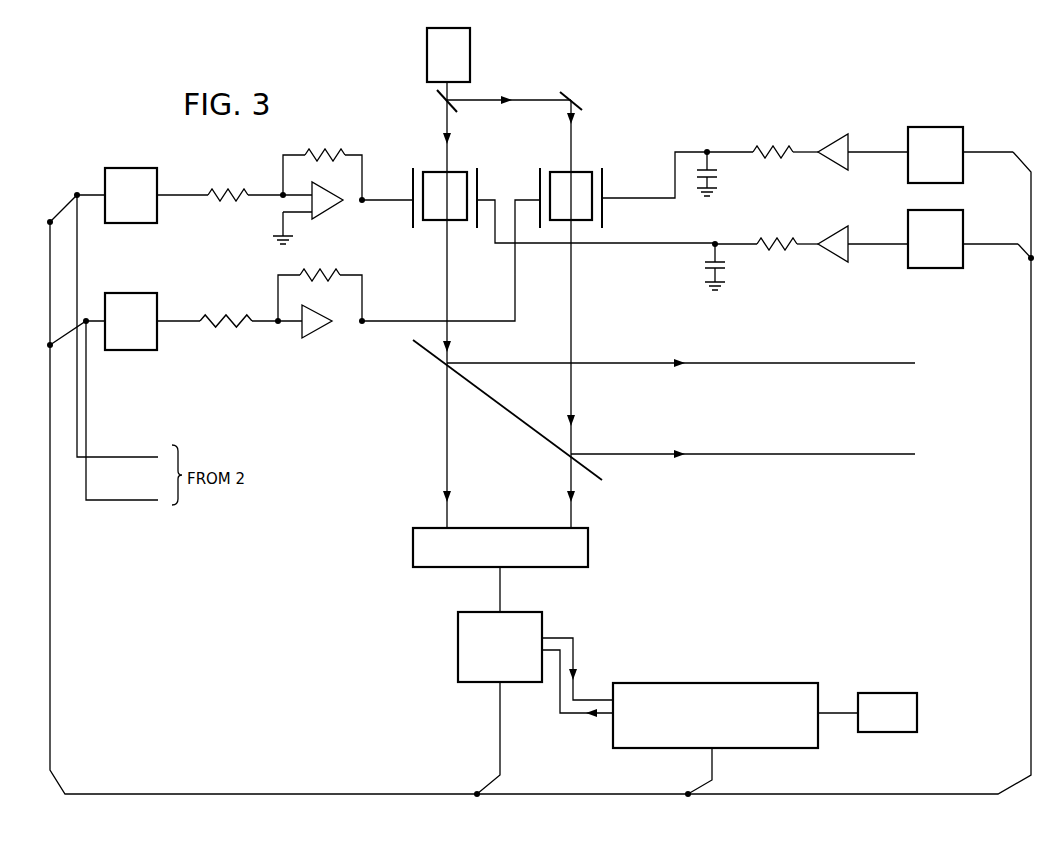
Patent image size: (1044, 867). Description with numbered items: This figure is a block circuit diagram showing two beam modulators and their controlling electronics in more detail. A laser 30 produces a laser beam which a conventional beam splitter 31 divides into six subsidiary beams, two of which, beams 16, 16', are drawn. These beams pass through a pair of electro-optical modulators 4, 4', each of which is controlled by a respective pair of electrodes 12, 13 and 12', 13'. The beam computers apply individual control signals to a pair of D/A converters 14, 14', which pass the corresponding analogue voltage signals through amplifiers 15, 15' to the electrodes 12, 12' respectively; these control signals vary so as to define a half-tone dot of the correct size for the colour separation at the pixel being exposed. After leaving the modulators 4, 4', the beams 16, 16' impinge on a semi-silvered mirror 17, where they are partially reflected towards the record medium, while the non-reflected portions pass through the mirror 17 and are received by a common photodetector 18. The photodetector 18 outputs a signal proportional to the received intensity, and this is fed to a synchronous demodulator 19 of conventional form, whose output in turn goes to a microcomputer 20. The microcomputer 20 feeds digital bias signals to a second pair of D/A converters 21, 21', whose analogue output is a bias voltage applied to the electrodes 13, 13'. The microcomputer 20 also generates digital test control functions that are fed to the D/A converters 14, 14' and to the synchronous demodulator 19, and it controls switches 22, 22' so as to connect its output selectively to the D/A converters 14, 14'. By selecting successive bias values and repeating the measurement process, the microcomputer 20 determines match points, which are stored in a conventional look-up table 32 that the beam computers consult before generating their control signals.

The electro-optical modulator 4 is at (446, 181).
The electro-optical modulator 4' is at (591, 178).
The electrode 12 is at (397, 185).
The electrode 12' is at (543, 224).
The electrode 13 is at (596, 200).
The electrode 13' is at (677, 190).
The D/A converter 14 is at (141, 183).
The D/A converter 14' is at (145, 346).
The amplifier 15 is at (285, 196).
The amplifier 15' is at (348, 279).
The laser beam 16 is at (464, 305).
The laser beam 16' is at (590, 314).
The semi-silvered mirror 17 is at (503, 407).
The photodetector 18 is at (588, 548).
The synchronous demodulator 19 is at (542, 632).
The microcomputer 20 is at (720, 683).
The D/A converter 21 is at (861, 254).
The D/A converter 21' is at (855, 160).
The switch 22 is at (102, 312).
The switch 22' is at (102, 409).
The laser 30 is at (427, 56).
The beam splitter 31 is at (437, 100).
The look-up table 32 is at (917, 713).